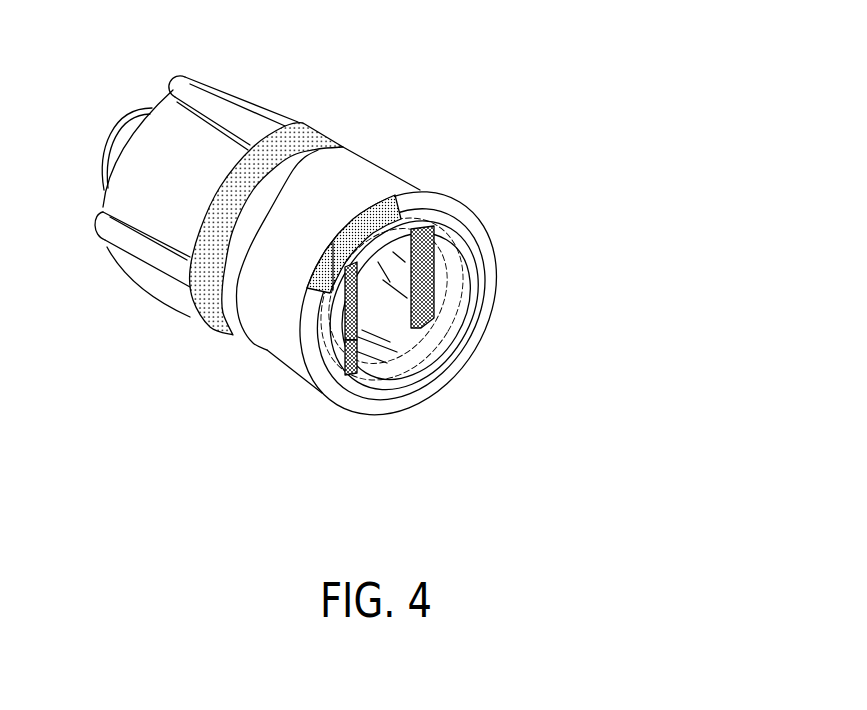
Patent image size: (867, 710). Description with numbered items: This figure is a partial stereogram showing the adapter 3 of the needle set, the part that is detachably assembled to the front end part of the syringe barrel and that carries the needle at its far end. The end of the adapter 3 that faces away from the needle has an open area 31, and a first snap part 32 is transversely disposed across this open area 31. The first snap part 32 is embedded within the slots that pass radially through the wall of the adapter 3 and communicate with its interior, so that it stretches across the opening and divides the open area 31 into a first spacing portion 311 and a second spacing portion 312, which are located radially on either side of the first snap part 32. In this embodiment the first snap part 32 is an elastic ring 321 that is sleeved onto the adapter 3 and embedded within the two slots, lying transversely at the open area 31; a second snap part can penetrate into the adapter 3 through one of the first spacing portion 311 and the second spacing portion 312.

The adapter 3 is at (350, 243).
The open area 31 is at (392, 316).
The first spacing portion 311 is at (445, 255).
The second spacing portion 312 is at (387, 280).
The first snap part 32 is at (343, 325).
The elastic ring 321 is at (350, 350).